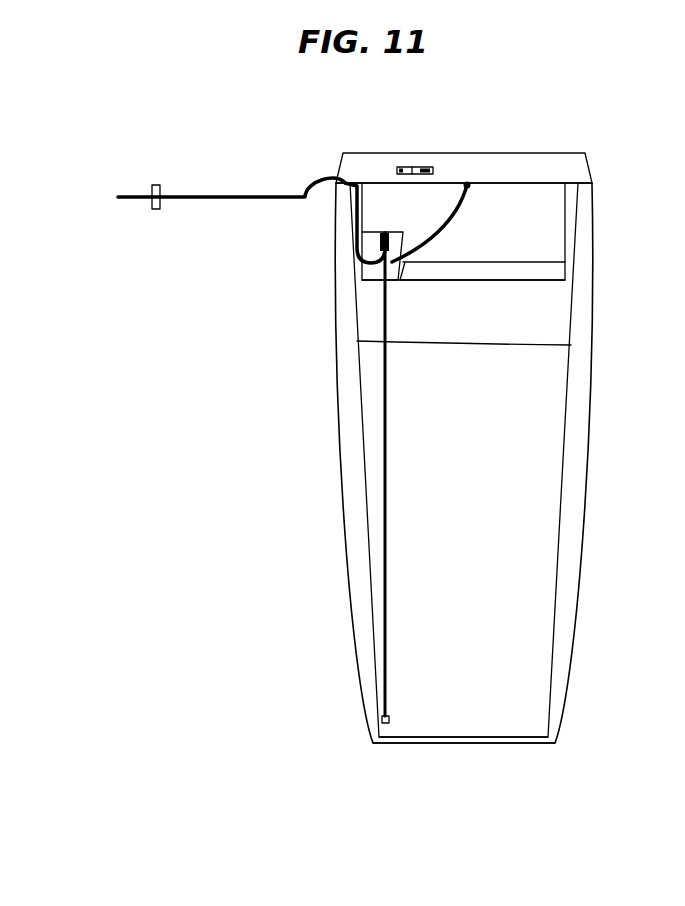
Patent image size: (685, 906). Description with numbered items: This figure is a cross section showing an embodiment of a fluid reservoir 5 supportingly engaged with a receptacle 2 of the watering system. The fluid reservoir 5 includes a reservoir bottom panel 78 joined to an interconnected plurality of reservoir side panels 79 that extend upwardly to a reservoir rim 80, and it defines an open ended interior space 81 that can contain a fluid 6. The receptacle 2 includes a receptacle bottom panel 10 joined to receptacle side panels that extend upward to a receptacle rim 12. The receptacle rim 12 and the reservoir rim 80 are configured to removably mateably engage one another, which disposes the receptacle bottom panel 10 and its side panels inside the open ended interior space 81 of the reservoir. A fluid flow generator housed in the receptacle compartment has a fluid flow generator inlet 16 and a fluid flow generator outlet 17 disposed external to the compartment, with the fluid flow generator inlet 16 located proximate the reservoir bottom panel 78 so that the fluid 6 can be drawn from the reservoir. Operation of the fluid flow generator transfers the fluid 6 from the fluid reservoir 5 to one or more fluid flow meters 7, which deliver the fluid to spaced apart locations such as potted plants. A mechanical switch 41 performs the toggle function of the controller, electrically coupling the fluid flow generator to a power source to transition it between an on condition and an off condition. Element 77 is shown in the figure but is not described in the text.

The receptacle 2 is at (578, 234).
The fluid reservoir 5 is at (601, 480).
The fluid 6 is at (479, 519).
The fluid flow meter 7 is at (153, 188).
The receptacle bottom panel 10 is at (525, 282).
The receptacle rim 12 is at (576, 171).
The fluid flow generator inlet 16 is at (391, 232).
The fluid flow generator outlet 17 is at (378, 236).
The mechanical switch 41 is at (400, 166).
The cable 77 is at (227, 195).
The reservoir bottom panel 78 is at (467, 745).
The reservoir side panels 79 is at (577, 438).
The reservoir rim 80 is at (585, 198).
The open ended interior space 81 is at (408, 421).